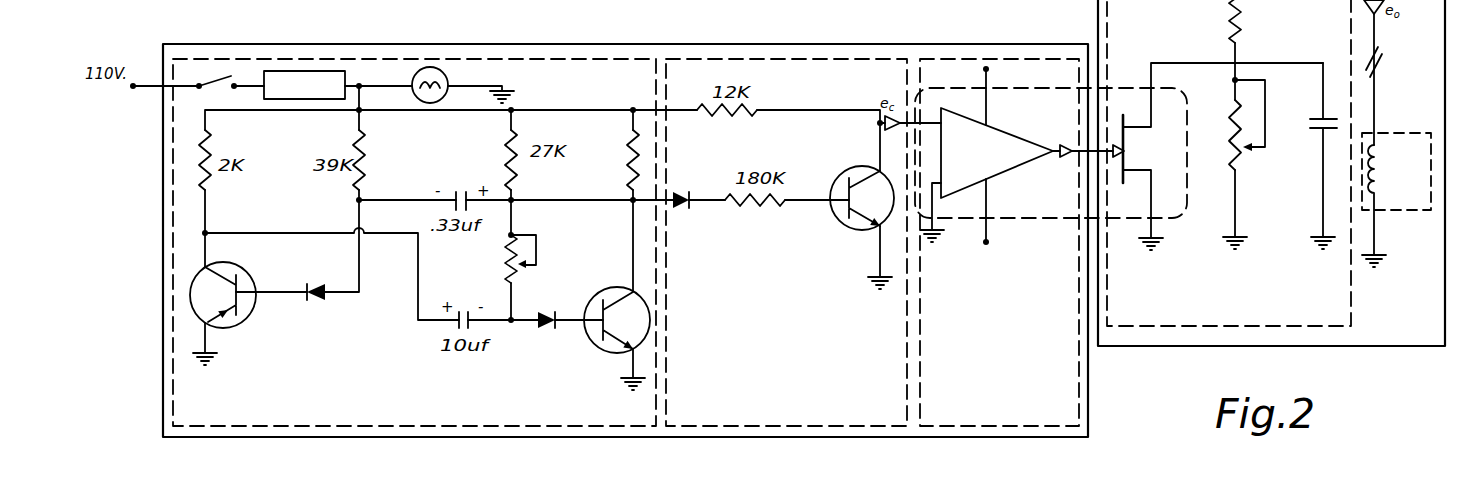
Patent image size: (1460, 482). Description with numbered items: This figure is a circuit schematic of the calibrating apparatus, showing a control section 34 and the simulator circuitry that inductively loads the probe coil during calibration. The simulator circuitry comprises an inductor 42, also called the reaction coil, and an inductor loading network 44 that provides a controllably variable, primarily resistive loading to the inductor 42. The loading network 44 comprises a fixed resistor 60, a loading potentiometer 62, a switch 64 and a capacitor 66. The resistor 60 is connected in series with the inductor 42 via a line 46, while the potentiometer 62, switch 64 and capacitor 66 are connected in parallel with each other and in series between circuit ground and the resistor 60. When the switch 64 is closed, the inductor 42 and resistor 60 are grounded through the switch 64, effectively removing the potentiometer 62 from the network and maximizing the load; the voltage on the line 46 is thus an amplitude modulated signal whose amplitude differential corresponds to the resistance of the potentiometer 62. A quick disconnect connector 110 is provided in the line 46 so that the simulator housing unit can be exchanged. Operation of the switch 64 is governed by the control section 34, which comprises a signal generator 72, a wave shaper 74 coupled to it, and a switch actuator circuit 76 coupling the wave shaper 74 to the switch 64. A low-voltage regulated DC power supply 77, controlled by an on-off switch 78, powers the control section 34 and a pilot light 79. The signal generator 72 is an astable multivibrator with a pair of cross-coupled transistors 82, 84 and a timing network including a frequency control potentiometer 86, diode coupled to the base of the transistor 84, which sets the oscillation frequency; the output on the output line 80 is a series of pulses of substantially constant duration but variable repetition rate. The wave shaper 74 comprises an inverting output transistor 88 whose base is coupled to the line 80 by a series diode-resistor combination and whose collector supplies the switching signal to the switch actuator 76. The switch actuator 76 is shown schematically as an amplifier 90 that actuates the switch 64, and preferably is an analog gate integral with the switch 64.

The control section 34 is at (625, 229).
The inductor loading network 44 is at (1163, 48).
The signal generator 72 is at (414, 242).
The wave shaper 74 is at (867, 91).
The switch actuator circuit 76 is at (999, 242).
The low-voltage regulated DC power supply 77 is at (360, 84).
The on-off switch 78 is at (219, 79).
The pilot light 79 is at (448, 80).
The output line 80 is at (633, 201).
The transistor 82 is at (249, 306).
The transistor 84 is at (597, 343).
The frequency control potentiometer 86 is at (540, 251).
The inverting output transistor 88 is at (862, 231).
The amplifier 90 is at (1023, 164).
The switch 64 is at (1140, 153).
The resistor 60 is at (1243, 21).
The loading potentiometer 62 is at (1246, 161).
The capacitor 66 is at (1320, 131).
The quick disconnect connector 110 is at (1383, 45).
The line 46 is at (1378, 88).
The inductor 42 is at (1390, 131).